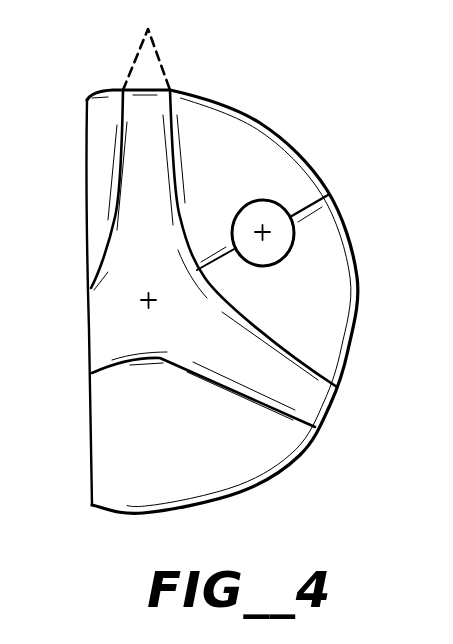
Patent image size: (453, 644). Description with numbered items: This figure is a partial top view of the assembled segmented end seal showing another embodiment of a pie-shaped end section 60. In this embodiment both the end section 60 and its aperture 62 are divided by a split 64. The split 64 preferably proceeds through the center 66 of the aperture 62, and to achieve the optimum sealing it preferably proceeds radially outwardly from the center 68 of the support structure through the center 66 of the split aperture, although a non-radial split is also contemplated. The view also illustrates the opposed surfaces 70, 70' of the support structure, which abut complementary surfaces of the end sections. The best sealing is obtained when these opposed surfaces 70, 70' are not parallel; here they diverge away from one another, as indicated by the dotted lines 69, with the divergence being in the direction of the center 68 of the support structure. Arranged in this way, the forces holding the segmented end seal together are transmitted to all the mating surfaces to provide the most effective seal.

The pie-shaped end section 60 is at (278, 170).
The aperture 62 is at (283, 234).
The split 64 is at (330, 215).
The center of the aperture 66 is at (264, 241).
The center of the support structure 68 is at (145, 302).
The dotted lines 69 is at (163, 57).
The first surface of the support structure 70 is at (81, 190).
The opposed surface of the support structure 70' is at (250, 238).